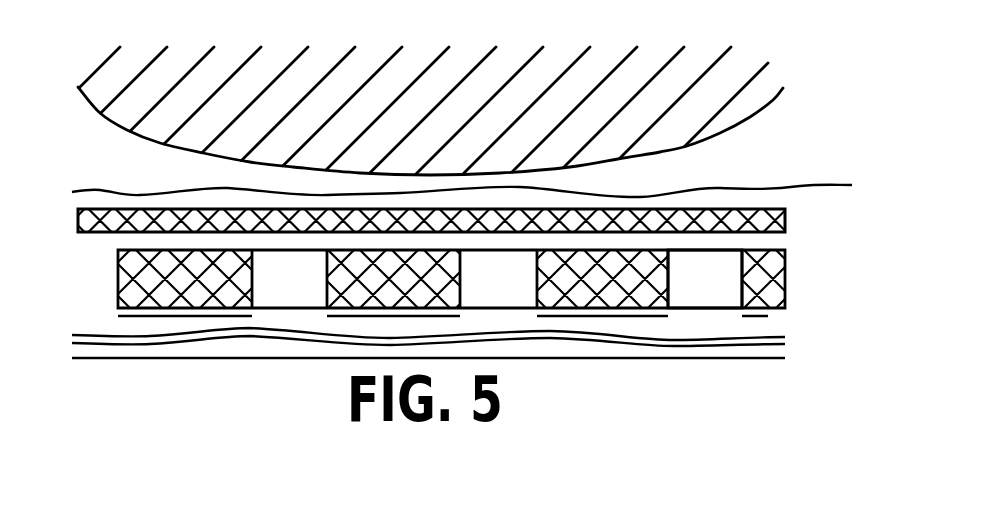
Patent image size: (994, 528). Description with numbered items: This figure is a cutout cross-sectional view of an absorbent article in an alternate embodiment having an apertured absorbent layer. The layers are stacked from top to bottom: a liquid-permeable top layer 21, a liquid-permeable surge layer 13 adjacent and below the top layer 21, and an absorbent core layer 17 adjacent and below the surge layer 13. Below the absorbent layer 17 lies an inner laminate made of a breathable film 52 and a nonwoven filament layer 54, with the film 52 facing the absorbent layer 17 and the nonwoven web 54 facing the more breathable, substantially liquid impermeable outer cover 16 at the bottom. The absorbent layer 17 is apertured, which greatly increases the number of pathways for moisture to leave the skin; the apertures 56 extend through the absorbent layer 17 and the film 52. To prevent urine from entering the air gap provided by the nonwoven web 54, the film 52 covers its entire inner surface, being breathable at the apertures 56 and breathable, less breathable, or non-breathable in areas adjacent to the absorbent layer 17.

The liquid-permeable top layer 21 is at (481, 183).
The liquid-permeable surge layer 13 is at (785, 220).
The absorbent core layer 17 is at (775, 272).
The breathable film 52 is at (785, 316).
The nonwoven filament layer 54 is at (785, 337).
The apertures 56 is at (722, 302).
The outer cover 16 is at (773, 360).